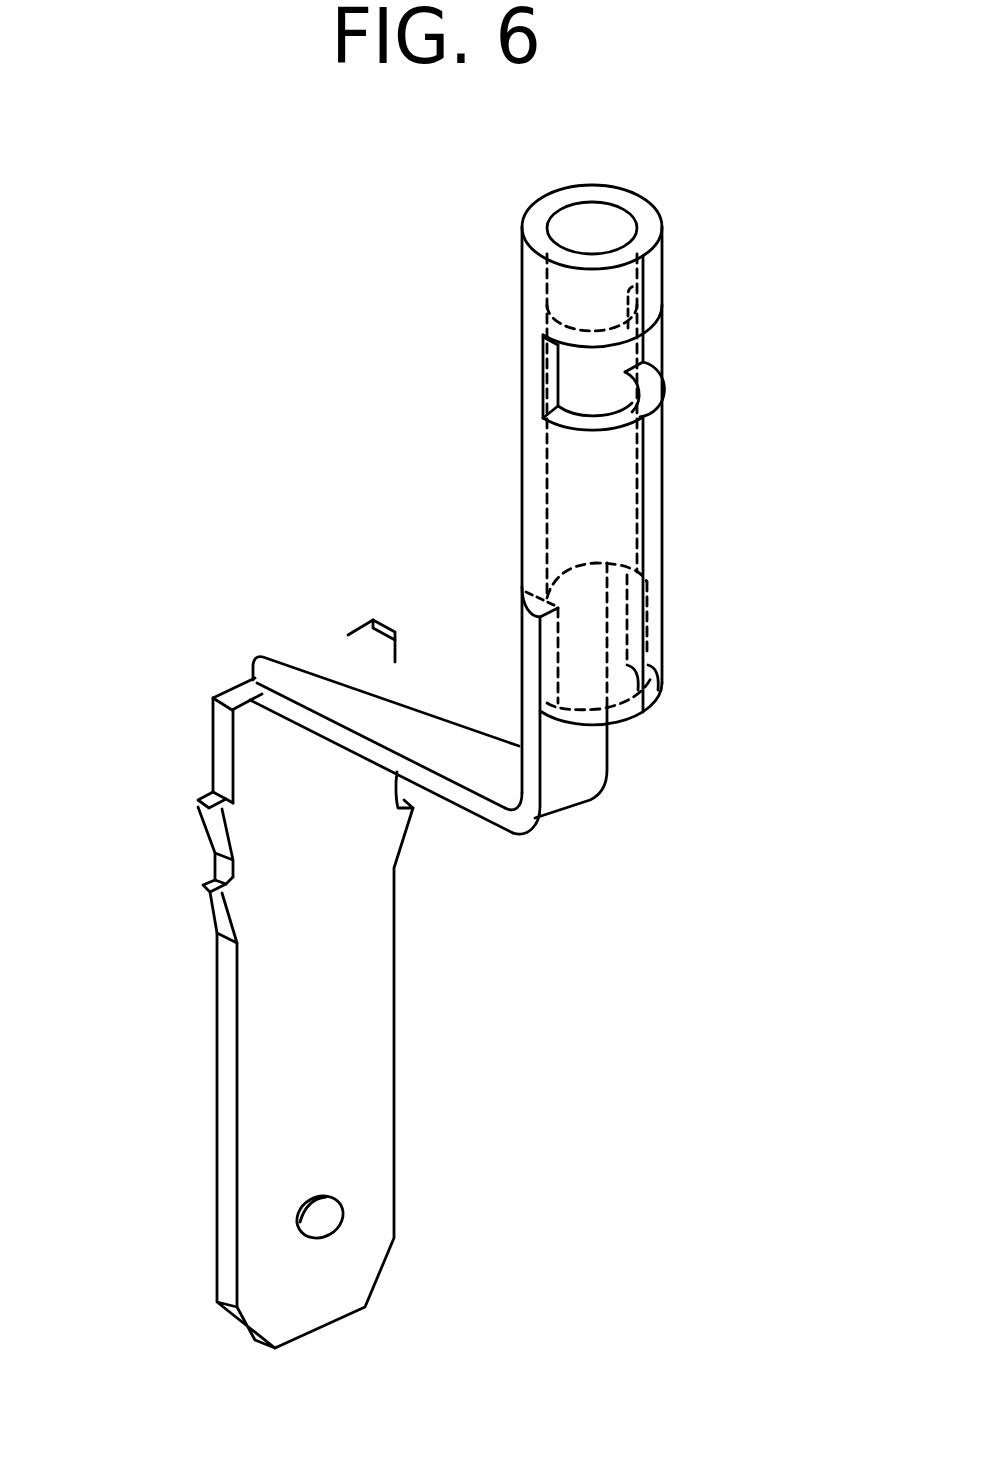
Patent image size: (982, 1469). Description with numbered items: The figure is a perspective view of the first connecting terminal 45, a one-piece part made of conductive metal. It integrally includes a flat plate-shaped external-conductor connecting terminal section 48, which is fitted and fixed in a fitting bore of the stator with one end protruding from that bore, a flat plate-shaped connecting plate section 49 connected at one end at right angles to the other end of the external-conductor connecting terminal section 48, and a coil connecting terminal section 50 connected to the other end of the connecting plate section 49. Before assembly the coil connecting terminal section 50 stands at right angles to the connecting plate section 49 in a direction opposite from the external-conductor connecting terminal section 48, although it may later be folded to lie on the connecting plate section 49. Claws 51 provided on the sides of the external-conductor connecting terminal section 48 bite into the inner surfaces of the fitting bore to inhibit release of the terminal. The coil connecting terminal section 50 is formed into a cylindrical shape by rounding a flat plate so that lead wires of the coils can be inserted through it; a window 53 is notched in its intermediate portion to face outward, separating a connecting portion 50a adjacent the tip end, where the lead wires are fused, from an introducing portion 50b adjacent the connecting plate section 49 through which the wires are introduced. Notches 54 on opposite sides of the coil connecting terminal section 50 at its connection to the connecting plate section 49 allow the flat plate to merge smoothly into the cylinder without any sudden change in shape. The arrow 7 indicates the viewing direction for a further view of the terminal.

The view direction arrow 7 is at (572, 1005).
The first connecting terminal 45 is at (612, 797).
The external-conductor connecting terminal section 48 is at (268, 1100).
The connecting plate section 49 is at (338, 653).
The coil connecting terminal section 50 is at (655, 503).
The connecting portion 50a is at (662, 268).
The introducing portion 50b is at (650, 547).
The claws 51 is at (203, 882).
The window 53 is at (650, 393).
The notches 54 is at (540, 648).